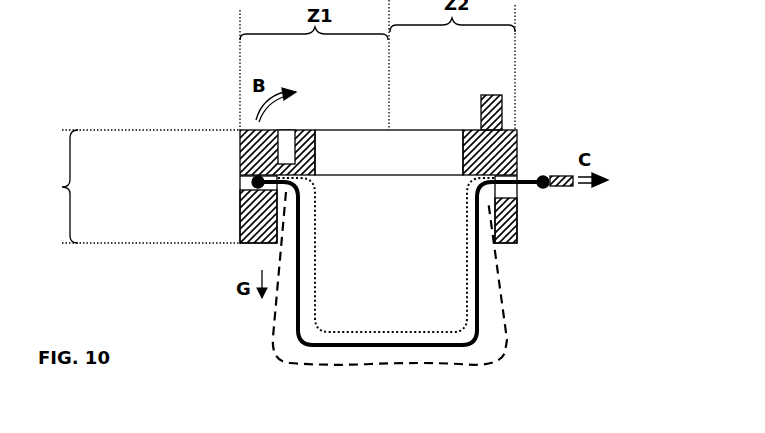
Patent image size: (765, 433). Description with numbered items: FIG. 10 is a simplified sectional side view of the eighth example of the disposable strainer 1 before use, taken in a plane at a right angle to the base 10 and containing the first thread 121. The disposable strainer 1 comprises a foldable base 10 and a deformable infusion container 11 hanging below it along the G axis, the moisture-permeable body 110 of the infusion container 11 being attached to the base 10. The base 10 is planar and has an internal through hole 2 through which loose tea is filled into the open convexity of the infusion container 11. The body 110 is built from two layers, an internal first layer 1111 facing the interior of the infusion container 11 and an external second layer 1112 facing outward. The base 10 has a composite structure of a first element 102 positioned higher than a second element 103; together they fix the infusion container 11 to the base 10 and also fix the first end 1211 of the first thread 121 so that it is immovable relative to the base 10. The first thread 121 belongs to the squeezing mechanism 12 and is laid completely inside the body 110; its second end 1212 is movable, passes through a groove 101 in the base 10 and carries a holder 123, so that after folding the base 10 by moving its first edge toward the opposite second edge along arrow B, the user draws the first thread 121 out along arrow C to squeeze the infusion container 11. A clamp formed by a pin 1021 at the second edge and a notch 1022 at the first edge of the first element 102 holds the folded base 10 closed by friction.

The disposable strainer 1 is at (186, 91).
The base 10 is at (135, 186).
The through hole 2 is at (389, 152).
The first element 102 is at (238, 152).
The pin 1021 is at (489, 93).
The notch 1022 is at (285, 138).
The second element 103 is at (238, 223).
The groove 101 is at (521, 198).
The infusion container 11 is at (362, 226).
The body 110 is at (288, 352).
The first layer 1111 is at (396, 328).
The second layer 1112 is at (402, 366).
The squeezing mechanism 12 is at (556, 142).
The first thread 121 is at (483, 338).
The first end 1211 is at (248, 183).
The second end 1212 is at (543, 173).
The holder 123 is at (562, 191).